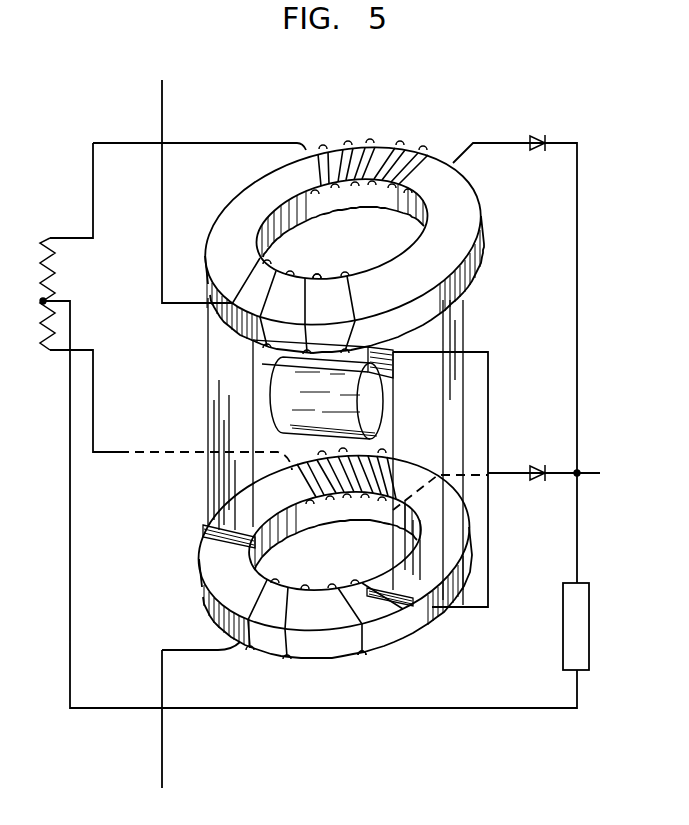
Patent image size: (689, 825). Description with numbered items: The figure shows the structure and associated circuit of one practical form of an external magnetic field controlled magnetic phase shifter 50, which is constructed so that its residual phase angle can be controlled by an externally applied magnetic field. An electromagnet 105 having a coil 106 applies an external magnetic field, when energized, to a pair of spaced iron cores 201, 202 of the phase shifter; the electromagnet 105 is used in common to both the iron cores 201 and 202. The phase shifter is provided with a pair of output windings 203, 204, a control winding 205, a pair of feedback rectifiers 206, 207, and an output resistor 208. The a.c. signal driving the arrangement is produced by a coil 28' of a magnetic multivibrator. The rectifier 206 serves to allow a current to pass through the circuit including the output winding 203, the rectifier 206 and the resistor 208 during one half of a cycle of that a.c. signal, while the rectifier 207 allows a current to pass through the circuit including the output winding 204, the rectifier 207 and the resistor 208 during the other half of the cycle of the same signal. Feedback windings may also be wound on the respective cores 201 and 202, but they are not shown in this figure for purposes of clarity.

The coil of a magnetic multivibrator 28' is at (48, 274).
The external magnetic field controlled magnetic phase shifter 50 is at (178, 484).
The electromagnet 105 is at (208, 382).
The coil 106 is at (343, 413).
The iron core 201 is at (238, 195).
The iron core 202 is at (205, 580).
The output winding 203 is at (352, 142).
The output winding 204 is at (334, 516).
The control winding 205 is at (319, 274).
The feedback rectifier 206 is at (544, 137).
The feedback rectifier 207 is at (537, 465).
The output resistor 208 is at (563, 640).